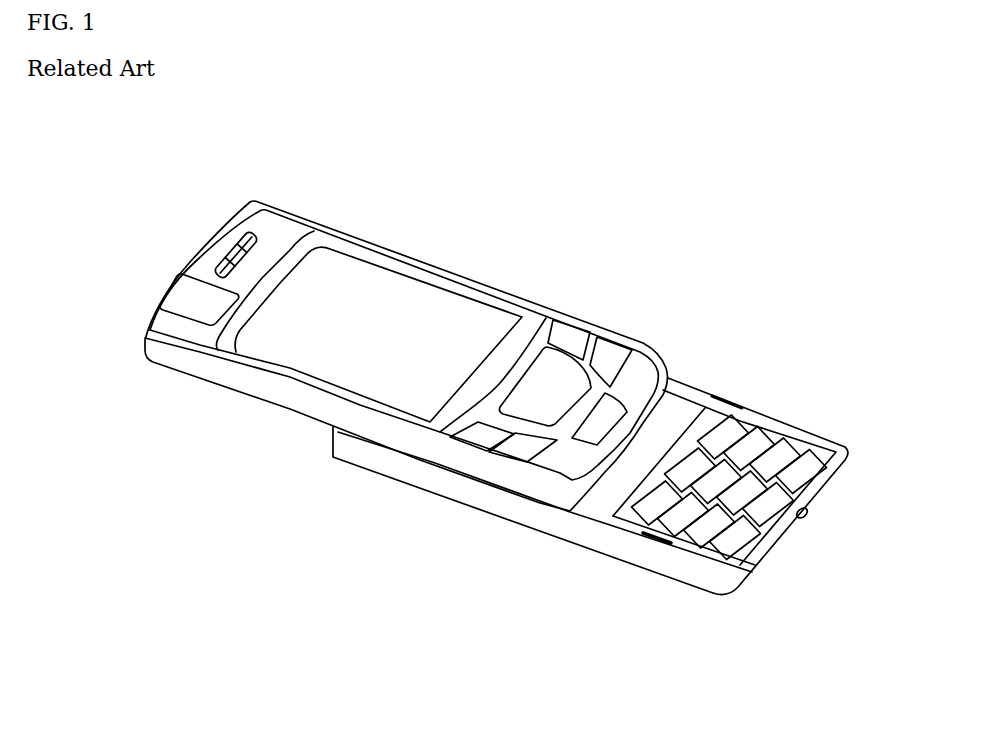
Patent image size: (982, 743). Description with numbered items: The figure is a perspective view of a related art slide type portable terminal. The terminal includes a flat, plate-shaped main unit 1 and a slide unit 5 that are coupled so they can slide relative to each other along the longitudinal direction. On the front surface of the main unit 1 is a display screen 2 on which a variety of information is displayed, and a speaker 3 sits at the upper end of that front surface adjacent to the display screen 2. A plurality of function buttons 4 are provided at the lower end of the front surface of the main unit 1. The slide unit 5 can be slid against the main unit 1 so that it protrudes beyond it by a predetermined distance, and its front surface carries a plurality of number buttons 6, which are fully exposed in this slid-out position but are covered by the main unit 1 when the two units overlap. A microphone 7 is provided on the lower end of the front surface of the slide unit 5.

The main unit 1 is at (280, 422).
The display screen 2 is at (385, 288).
The speaker 3 is at (233, 252).
The function buttons 4 is at (525, 445).
The slide unit 5 is at (618, 579).
The number buttons 6 is at (833, 433).
The microphone 7 is at (810, 513).